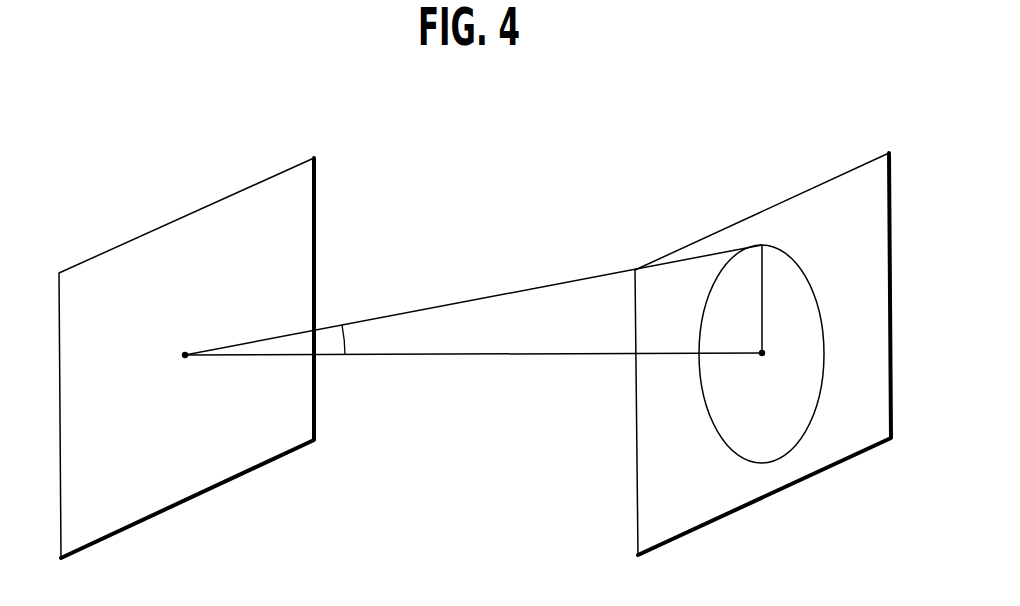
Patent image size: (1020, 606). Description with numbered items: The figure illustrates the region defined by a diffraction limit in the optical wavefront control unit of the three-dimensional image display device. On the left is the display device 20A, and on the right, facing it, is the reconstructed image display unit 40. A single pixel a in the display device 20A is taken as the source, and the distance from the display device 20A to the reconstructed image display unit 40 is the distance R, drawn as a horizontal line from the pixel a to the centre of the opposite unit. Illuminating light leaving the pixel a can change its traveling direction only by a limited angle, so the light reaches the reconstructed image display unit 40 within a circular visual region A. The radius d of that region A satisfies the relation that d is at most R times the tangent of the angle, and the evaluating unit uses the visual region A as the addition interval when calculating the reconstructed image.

The display device 20A is at (273, 177).
The reconstructed image display unit 40 is at (788, 200).
The pixel a is at (185, 360).
The distance R is at (473, 373).
The region (visual region) A is at (778, 423).
The radius of visual region d is at (773, 299).